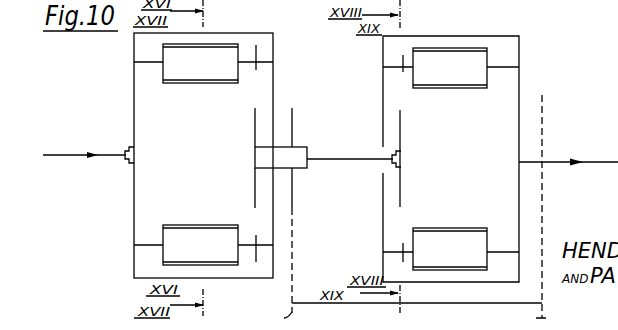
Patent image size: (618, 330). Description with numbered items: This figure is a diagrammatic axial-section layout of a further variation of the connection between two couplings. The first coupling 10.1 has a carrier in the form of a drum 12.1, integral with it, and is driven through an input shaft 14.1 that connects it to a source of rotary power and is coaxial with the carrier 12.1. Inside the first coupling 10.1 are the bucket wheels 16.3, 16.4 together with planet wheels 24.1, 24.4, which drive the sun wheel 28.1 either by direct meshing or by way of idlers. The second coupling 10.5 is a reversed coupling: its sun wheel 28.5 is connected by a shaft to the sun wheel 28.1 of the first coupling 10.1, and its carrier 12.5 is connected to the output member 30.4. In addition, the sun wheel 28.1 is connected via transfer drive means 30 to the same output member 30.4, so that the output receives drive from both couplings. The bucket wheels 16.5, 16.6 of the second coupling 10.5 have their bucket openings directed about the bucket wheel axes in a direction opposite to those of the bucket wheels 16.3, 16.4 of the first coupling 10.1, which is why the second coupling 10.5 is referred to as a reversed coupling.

The first coupling 10.1 is at (118, 114).
The second coupling 10.5 is at (530, 80).
The carrier 12.1 is at (131, 189).
The carrier 12.5 is at (521, 217).
The input shaft 14.1 is at (74, 153).
The bucket wheel 16.3 is at (222, 92).
The bucket wheel 16.4 is at (203, 226).
The bucket wheel 16.5 is at (480, 96).
The bucket wheel 16.6 is at (476, 226).
The planet wheel 24.1 is at (386, 61).
The planet wheel 24.4 is at (388, 253).
The sun wheel 28.1 is at (255, 127).
The sun wheel 28.5 is at (402, 180).
The transfer drive means 30 is at (496, 312).
The output member 30.4 is at (553, 161).